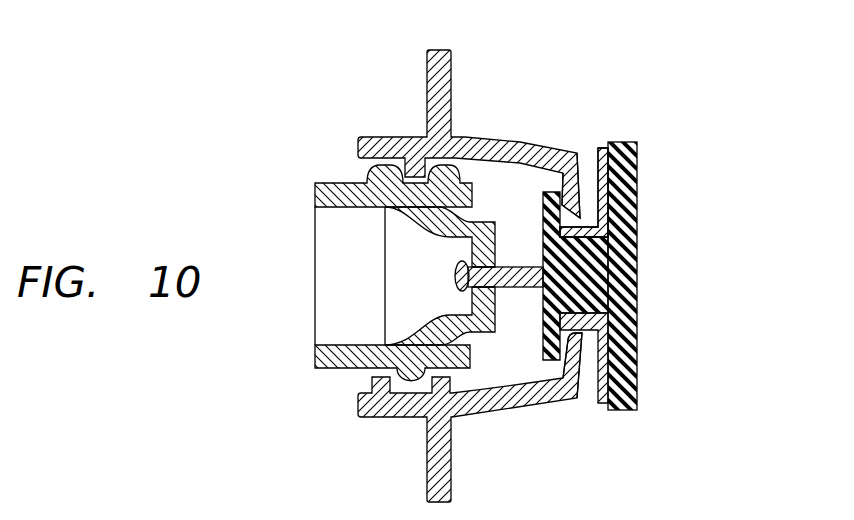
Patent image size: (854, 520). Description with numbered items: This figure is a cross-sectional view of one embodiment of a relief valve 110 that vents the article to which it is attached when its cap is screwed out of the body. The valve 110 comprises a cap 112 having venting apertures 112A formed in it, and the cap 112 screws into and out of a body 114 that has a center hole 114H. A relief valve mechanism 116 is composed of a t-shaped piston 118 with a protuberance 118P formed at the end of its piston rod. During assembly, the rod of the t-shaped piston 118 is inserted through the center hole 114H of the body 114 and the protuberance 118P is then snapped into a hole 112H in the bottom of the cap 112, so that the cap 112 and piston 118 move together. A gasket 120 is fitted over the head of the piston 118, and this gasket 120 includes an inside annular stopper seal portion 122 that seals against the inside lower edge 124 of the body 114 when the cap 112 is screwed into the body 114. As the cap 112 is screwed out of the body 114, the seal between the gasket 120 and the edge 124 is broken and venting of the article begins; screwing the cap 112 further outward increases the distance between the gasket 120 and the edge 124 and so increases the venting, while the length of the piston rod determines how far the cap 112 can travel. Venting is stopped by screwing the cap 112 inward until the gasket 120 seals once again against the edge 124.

The relief valve 110 is at (706, 68).
The cap 112 is at (411, 219).
The venting apertures 112A is at (476, 208).
The hole 112H is at (470, 292).
The body 114 is at (534, 276).
The center hole 114H is at (637, 370).
The relief valve mechanism 116 is at (660, 134).
The t-shaped piston 118 is at (637, 253).
The protuberance 118P is at (455, 263).
The gasket 120 is at (637, 217).
The inside annular stopper seal portion 122 is at (553, 192).
The inside lower edge 124 is at (637, 178).